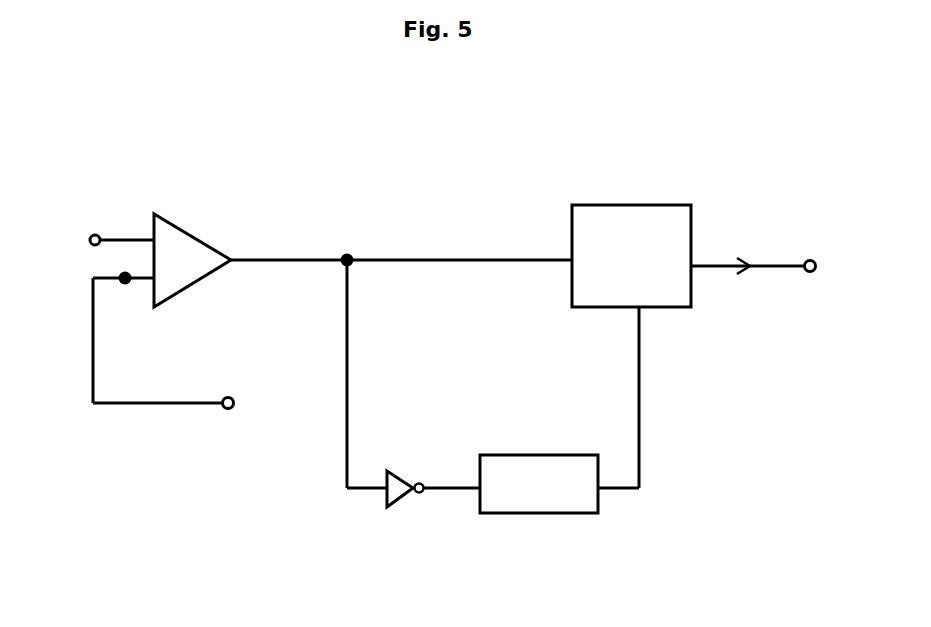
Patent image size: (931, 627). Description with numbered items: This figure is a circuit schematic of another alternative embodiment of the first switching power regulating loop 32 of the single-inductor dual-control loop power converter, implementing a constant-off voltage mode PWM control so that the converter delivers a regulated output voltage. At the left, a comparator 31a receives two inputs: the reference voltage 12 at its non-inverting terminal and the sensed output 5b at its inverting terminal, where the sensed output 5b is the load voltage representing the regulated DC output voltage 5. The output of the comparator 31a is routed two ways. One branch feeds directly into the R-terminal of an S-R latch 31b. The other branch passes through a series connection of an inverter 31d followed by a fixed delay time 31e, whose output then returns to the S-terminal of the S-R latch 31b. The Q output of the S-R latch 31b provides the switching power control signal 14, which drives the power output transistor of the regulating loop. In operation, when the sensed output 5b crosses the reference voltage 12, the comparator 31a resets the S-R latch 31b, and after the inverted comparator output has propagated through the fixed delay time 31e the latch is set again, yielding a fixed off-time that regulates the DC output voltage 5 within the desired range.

The first switching power regulating loop 32 is at (108, 102).
The reference voltage 12 is at (83, 241).
The comparator 31a is at (205, 233).
The sensed output 5b is at (126, 285).
The regulated DC output voltage 5 is at (221, 413).
The S-R latch 31b is at (647, 203).
The switching power control signal 14 is at (805, 275).
The inverter 31d is at (407, 505).
The fixed delay time 31e is at (541, 451).